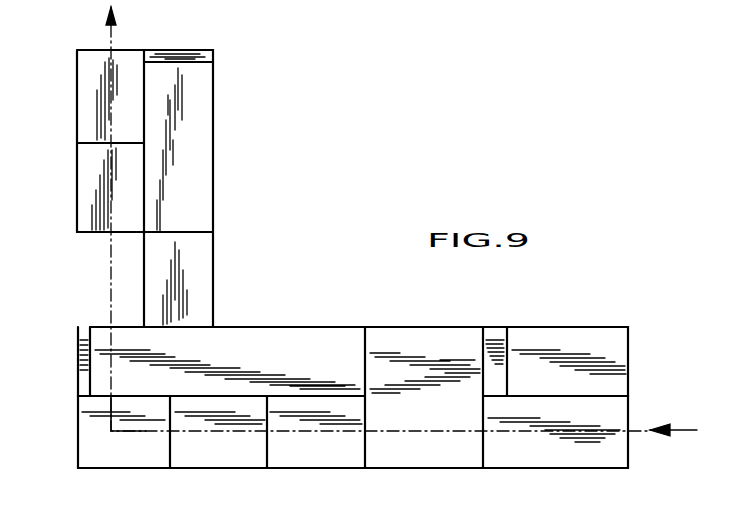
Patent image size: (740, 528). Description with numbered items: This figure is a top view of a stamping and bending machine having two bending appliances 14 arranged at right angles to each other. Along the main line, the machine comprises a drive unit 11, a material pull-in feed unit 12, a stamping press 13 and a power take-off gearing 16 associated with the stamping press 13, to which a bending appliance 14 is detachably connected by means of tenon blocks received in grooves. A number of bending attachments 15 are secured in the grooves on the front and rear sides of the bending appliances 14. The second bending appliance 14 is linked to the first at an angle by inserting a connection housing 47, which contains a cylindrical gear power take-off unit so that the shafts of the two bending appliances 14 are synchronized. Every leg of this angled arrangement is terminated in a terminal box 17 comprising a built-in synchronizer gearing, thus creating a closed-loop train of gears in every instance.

The drive unit 11 is at (578, 335).
The material pull-in feed unit 12 is at (557, 458).
The stamping press 13 is at (424, 336).
The bending appliance 14 is at (193, 157).
The bending attachment 15 is at (88, 93).
The power take-off gearing 16 is at (493, 335).
The terminal box 17 is at (187, 53).
The connection housing 47 is at (203, 273).